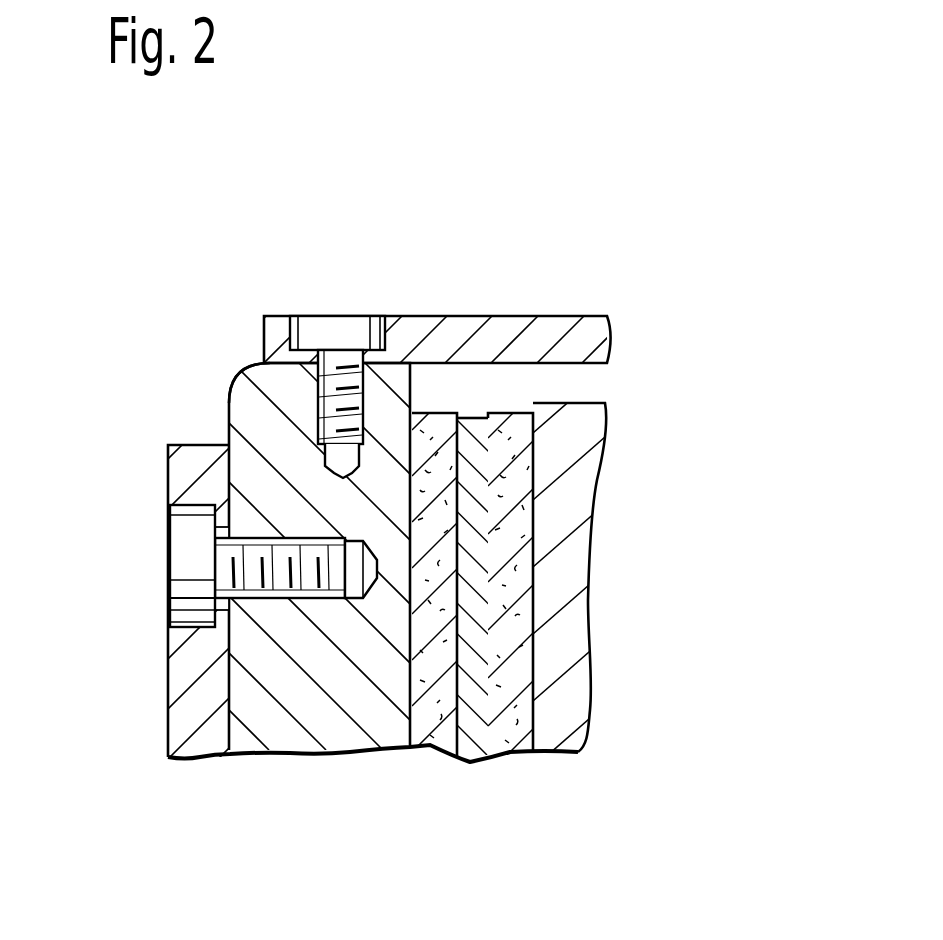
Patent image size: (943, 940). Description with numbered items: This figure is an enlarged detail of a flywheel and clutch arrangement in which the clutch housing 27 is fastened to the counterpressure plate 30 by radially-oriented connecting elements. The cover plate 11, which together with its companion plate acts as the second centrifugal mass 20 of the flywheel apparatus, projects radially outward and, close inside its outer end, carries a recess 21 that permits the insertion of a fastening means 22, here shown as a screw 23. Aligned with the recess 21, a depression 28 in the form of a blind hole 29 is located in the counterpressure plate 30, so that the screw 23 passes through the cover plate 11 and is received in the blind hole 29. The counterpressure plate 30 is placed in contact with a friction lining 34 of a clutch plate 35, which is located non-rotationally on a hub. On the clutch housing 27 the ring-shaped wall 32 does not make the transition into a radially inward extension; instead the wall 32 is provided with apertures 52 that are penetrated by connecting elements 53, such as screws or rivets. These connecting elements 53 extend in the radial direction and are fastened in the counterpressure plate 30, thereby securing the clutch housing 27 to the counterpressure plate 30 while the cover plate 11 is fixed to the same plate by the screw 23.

The cover plate 11 is at (185, 720).
The second centrifugal mass 20 is at (199, 770).
The recess 21 is at (227, 528).
The fastening means 22 is at (229, 663).
The screw 23 is at (170, 603).
The clutch housing 27 is at (477, 287).
The depression 28 is at (276, 612).
The blind hole 29 is at (363, 598).
The counterpressure plate 30 is at (345, 737).
The ring-shaped wall 32 is at (497, 333).
The friction lining 34 is at (510, 747).
The clutch plate 35 is at (488, 404).
The aperture 52 is at (265, 363).
The connecting element 53 is at (347, 333).